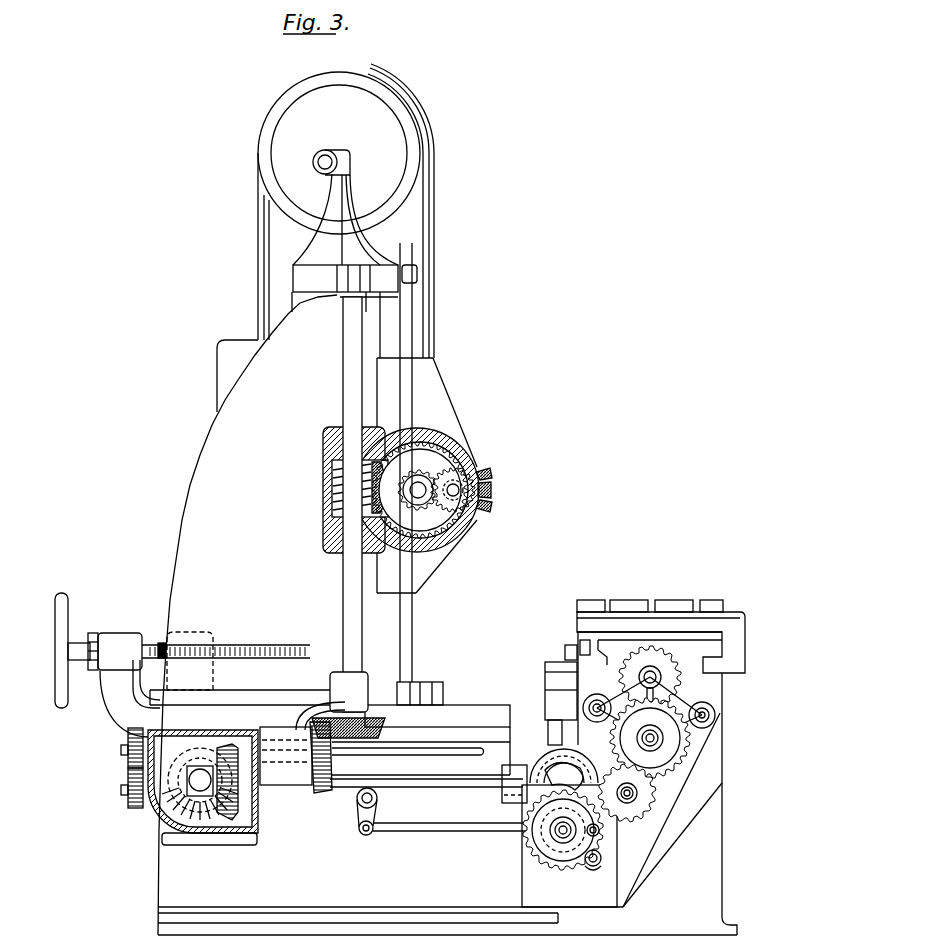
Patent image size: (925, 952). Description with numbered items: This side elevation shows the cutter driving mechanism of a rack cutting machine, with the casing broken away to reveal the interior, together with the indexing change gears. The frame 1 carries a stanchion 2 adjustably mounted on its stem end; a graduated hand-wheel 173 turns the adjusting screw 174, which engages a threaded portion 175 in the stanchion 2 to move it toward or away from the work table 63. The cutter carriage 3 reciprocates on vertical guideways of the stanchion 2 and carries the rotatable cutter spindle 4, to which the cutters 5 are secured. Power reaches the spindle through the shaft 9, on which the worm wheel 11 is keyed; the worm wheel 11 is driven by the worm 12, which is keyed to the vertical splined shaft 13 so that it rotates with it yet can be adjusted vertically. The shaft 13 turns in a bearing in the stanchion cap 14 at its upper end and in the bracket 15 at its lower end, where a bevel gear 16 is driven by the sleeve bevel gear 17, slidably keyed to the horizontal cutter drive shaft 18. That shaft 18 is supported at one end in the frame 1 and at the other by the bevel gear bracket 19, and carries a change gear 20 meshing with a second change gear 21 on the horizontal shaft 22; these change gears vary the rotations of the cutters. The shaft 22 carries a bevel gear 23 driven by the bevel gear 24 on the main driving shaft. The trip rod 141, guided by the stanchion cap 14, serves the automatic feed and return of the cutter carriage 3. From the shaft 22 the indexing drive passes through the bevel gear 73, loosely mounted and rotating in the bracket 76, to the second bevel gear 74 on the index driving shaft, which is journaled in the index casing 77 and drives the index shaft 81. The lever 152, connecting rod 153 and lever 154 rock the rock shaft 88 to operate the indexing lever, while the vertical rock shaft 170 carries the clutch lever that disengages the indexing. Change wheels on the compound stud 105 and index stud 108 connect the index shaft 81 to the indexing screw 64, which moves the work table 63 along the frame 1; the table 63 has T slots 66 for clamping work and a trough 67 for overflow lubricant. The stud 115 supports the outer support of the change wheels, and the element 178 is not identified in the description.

The frame 1 is at (722, 860).
The stanchion 2 is at (200, 471).
The cutter carriage 3 is at (425, 572).
The cutter spindle 4 is at (456, 484).
The cutters 5 is at (488, 494).
The shaft 9 is at (418, 498).
The worm wheel 11 is at (447, 530).
The worm 12 is at (330, 510).
The vertical splined shaft 13 is at (343, 605).
The stanchion cap 14 is at (298, 275).
The bracket 15 is at (330, 678).
The bevel gear 16 is at (382, 735).
The sleeve bevel gear 17 is at (325, 788).
The horizontal cutter drive shaft 18 is at (420, 748).
The bevel gear bracket 19 is at (256, 828).
The change gear 20 is at (127, 745).
The second change gear 21 is at (128, 805).
The horizontal shaft 22 is at (443, 788).
The bevel gear 23 is at (222, 822).
The bevel gear 24 is at (172, 822).
The work table 63 is at (712, 610).
The indexing screw 64 is at (660, 670).
The T slots 66 is at (648, 610).
The trough 67 is at (736, 616).
The bevel gear 73 is at (536, 759).
The second bevel gear 74 is at (549, 754).
The bracket 76 is at (512, 800).
The index casing 77 is at (592, 906).
The index shaft 81 is at (566, 840).
The rock shaft 88 is at (602, 860).
The compound stud 105 is at (657, 793).
The index stud 108 is at (650, 748).
The stud 115 is at (600, 702).
The trip rod 141 is at (412, 658).
The lever 152 is at (378, 808).
The connecting rod 153 is at (465, 831).
The lever 154 is at (595, 868).
The vertical rock shaft 170 is at (547, 722).
The graduated hand-wheel 173 is at (68, 606).
The adjusting screw 174 is at (161, 643).
The threaded portion 175 is at (205, 647).
The pivot 178 is at (703, 702).